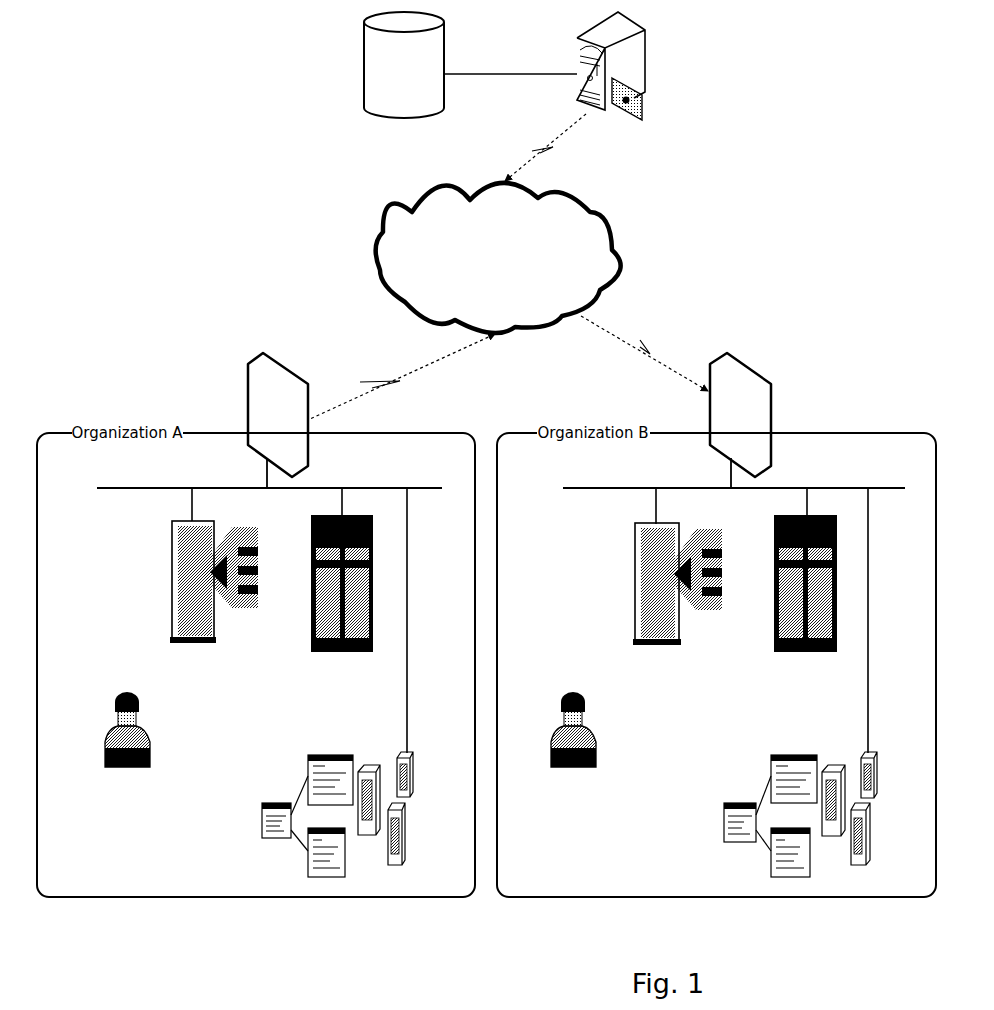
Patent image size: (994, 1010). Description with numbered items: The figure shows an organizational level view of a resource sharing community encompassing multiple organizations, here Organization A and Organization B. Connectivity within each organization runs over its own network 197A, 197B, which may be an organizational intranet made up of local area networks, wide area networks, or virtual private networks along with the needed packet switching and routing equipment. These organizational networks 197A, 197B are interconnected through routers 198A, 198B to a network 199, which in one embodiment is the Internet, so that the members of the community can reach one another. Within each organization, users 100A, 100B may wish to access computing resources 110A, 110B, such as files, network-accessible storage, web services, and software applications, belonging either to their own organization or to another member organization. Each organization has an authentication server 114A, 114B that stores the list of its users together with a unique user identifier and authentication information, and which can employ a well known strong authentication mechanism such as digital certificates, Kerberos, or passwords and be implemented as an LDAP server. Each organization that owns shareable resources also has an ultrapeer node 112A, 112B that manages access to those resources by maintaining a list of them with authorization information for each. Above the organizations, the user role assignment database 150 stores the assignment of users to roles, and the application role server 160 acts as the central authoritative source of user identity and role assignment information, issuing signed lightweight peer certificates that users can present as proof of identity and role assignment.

The user role assignment database 150 is at (404, 65).
The application role server 160 is at (642, 93).
The network 199 is at (498, 258).
The router 198A is at (294, 416).
The router 198B is at (756, 416).
The network 197A is at (269, 611).
The network 197B is at (734, 611).
The authentication server 114A is at (218, 619).
The authentication server 114B is at (668, 620).
The ultrapeer node 112A is at (342, 605).
The ultrapeer node 112B is at (805, 605).
The user 100A is at (128, 749).
The user 100B is at (574, 749).
The computing resources 110A is at (361, 825).
The computing resources 110B is at (825, 825).